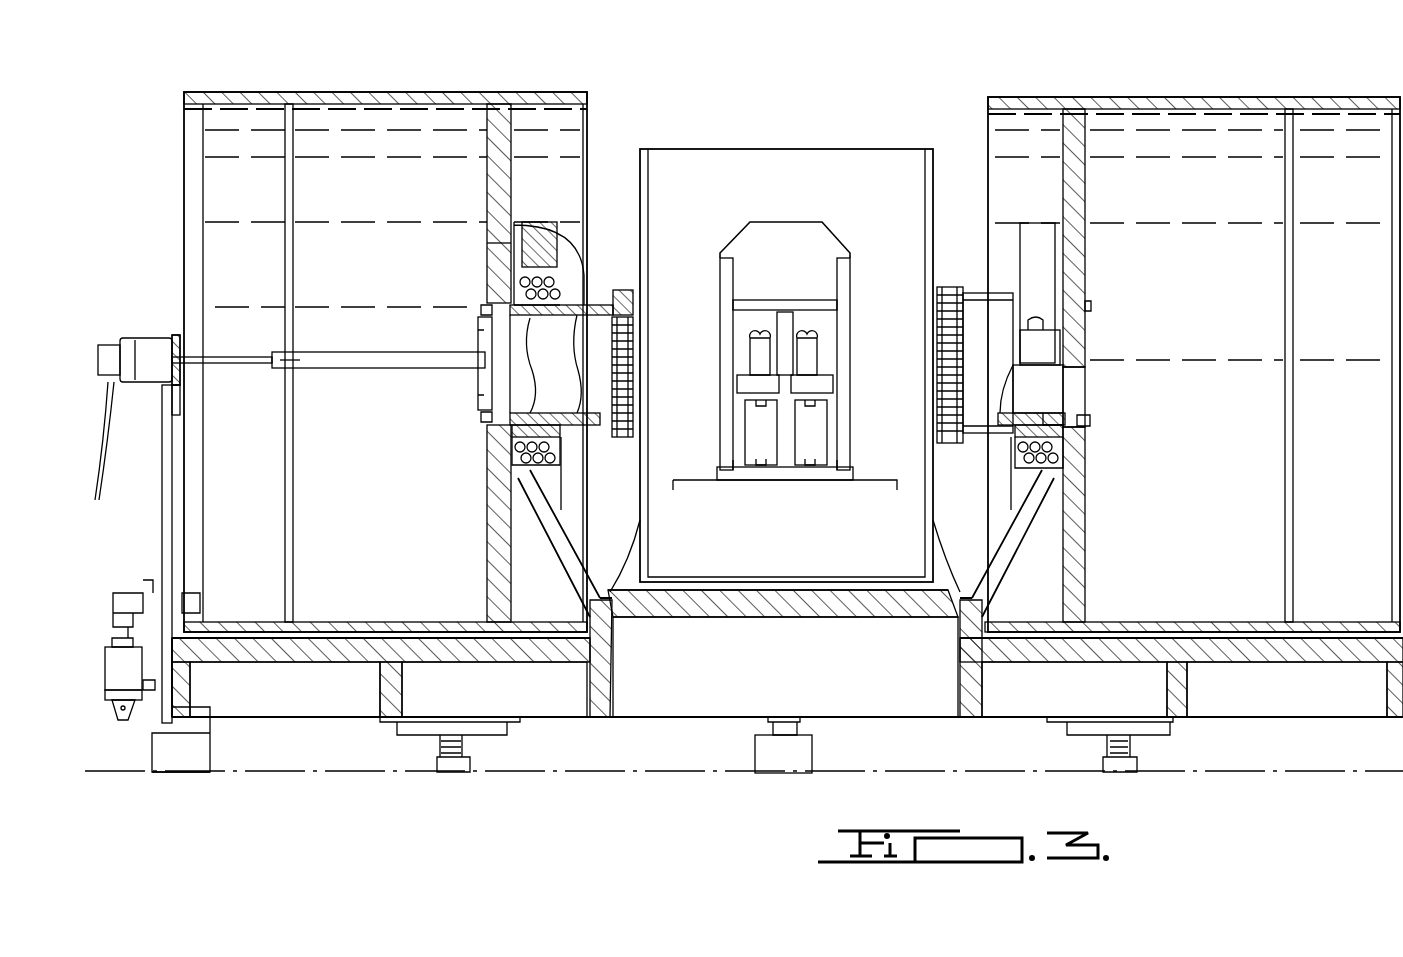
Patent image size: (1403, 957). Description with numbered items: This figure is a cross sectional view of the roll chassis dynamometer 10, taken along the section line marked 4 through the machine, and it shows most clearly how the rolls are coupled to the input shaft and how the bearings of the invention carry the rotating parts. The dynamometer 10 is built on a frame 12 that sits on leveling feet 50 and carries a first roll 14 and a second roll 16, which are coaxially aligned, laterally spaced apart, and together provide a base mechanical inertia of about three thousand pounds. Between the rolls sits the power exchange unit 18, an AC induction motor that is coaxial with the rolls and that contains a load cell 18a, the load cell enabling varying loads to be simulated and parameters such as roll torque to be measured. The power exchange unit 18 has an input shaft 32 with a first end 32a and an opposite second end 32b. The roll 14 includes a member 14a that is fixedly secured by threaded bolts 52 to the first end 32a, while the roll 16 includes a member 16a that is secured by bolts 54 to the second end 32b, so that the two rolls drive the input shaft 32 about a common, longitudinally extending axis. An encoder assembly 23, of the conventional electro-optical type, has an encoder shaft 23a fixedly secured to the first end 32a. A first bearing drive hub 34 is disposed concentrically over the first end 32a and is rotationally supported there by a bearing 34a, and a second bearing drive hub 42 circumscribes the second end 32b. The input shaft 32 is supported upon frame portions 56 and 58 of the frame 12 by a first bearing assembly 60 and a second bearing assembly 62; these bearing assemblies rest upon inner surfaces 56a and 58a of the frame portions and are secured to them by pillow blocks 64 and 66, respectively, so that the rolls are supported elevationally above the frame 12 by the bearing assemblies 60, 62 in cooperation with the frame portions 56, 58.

The roll chassis dynamometer 10 is at (155, 97).
The frame 12 is at (595, 720).
The first roll 14 is at (410, 93).
The member of first roll 14a is at (489, 152).
The second roll 16 is at (1242, 95).
The member of second roll 16a is at (1088, 157).
The power exchange unit 18 is at (733, 145).
The load cell 18a is at (728, 228).
The encoder assembly 23 is at (143, 338).
The encoder shaft 23a is at (300, 356).
The input shaft 32 is at (572, 322).
The first end of input shaft 32a is at (545, 365).
The second end of input shaft 32b is at (1043, 413).
The first bearing drive hub 34 is at (600, 292).
The bearing 34a is at (632, 303).
The section line 4 is at (490, 243).
The second bearing drive hub 42 is at (976, 310).
The leveling foot 50 is at (432, 731).
The threaded bolts 52 is at (484, 310).
The bolts 54 is at (1088, 306).
The first frame portion 56 is at (569, 545).
The inner surface of first frame portion 56a is at (520, 470).
The second frame portion 58 is at (990, 562).
The inner surface of second frame portion 58a is at (1058, 452).
The first bearing assembly 60 is at (552, 467).
The second bearing assembly 62 is at (1060, 480).
The first pillow block 64 is at (532, 266).
The second pillow block 66 is at (1032, 224).